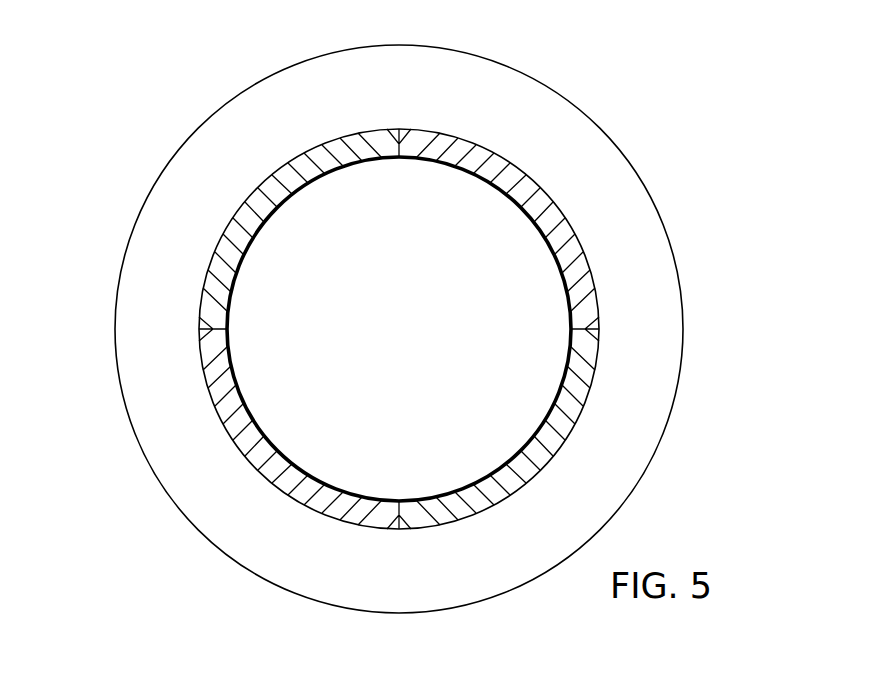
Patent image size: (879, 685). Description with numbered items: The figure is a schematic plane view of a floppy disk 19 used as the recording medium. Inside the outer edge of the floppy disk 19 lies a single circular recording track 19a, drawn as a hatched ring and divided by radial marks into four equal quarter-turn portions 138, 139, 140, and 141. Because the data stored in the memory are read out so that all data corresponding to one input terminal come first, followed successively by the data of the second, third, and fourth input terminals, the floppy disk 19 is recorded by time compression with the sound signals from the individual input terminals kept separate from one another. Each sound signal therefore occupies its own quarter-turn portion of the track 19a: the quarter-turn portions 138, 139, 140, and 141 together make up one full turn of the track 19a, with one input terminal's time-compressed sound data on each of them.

The floppy disk 19 is at (537, 75).
The track 19a is at (557, 203).
The quarter-turn portion 138 is at (580, 267).
The quarter-turn portion 139 is at (580, 397).
The quarter-turn portion 140 is at (215, 406).
The quarter-turn portion 141 is at (228, 247).